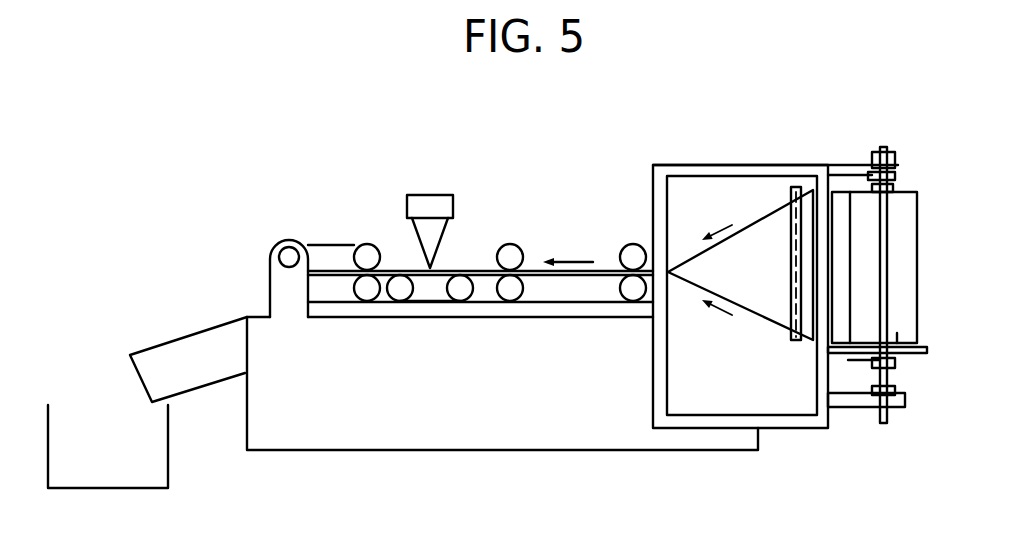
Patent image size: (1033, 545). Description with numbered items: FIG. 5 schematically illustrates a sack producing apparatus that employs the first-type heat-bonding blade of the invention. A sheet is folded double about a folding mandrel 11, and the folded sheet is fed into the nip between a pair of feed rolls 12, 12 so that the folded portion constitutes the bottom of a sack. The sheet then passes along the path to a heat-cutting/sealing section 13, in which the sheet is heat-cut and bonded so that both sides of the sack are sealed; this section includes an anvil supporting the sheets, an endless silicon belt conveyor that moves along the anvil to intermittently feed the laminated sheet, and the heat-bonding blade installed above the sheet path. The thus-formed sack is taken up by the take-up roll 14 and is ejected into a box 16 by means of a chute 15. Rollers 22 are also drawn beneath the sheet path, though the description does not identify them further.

The folding mandrel 11 is at (753, 255).
The feed rolls 12 is at (512, 245).
The heat-cutting/sealing section 13 is at (427, 195).
The take-up roll 14 is at (363, 243).
The chute 15 is at (202, 328).
The box 16 is at (170, 453).
The support rollers 22 is at (427, 302).